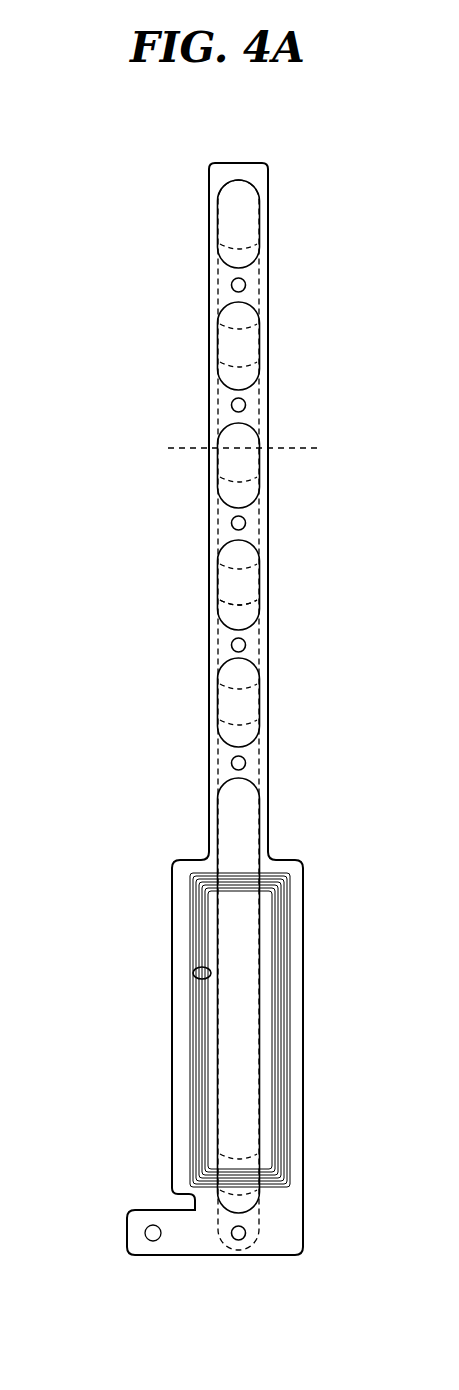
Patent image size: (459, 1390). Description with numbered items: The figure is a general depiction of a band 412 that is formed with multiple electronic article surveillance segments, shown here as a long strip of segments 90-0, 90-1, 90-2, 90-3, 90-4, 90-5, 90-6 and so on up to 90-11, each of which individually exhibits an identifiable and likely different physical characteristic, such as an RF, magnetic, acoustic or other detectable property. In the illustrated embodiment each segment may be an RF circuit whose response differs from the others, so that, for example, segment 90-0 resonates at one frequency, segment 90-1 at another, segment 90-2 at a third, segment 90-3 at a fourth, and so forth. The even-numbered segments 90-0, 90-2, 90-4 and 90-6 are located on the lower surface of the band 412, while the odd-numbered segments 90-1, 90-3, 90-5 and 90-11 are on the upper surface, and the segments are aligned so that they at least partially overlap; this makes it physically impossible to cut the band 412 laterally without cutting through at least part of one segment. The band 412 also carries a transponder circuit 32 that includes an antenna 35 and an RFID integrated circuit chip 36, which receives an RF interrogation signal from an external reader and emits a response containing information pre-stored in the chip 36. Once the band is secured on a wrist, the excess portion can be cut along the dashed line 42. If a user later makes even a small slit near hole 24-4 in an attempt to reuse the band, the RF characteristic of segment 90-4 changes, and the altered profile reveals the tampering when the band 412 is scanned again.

The band 412 is at (115, 247).
The dashed line 42 is at (180, 440).
The EAS segment 90-11 is at (249, 225).
The EAS segment 90-6 is at (228, 522).
The EAS segment 90-5 is at (243, 577).
The EAS segment 90-4 is at (253, 632).
The EAS segment 90-3 is at (243, 693).
The EAS segment 90-2 is at (248, 767).
The EAS segment 90-1 is at (260, 1193).
The EAS segment 90-0 is at (257, 1237).
The hole 24-4 is at (233, 646).
The transponder circuit 32 is at (166, 1030).
The antenna 35 is at (154, 940).
The RFID integrated circuit chip 36 is at (210, 992).